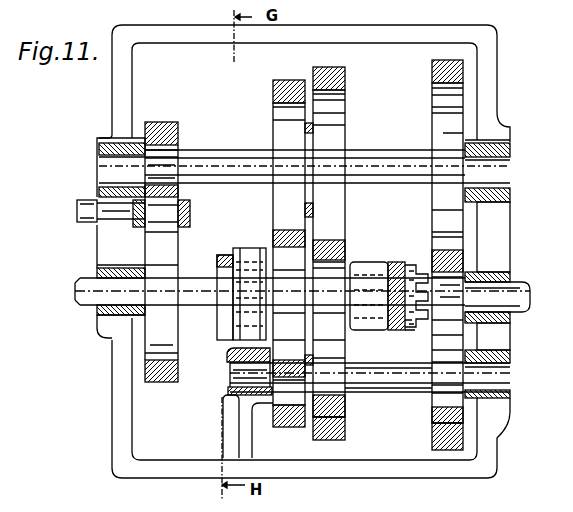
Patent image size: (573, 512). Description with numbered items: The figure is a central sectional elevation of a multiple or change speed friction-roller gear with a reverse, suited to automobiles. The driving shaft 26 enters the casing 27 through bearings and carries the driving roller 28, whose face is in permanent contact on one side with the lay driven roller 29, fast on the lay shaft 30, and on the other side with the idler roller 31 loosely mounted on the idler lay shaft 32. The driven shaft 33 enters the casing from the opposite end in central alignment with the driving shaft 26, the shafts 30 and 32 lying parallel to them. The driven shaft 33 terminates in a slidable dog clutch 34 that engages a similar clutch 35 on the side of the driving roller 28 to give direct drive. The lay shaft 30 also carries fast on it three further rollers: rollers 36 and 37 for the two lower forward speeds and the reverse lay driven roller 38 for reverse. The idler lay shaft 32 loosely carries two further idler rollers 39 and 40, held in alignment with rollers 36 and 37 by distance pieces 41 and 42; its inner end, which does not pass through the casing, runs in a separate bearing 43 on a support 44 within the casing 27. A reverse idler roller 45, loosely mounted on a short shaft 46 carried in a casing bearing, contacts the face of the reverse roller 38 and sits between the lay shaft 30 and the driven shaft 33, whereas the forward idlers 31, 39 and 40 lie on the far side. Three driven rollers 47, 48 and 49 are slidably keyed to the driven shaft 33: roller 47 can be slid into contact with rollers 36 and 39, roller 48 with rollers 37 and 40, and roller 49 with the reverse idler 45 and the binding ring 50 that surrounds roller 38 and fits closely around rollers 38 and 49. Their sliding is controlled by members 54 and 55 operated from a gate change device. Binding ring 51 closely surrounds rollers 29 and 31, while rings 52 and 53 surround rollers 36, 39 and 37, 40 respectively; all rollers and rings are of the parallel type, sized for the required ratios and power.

The driving shaft 26 is at (500, 295).
The casing 27 is at (498, 210).
The driving roller 28 is at (447, 288).
The lay driven roller 29 is at (445, 106).
The lay shaft 30 is at (113, 163).
The idler roller 31 is at (448, 360).
The idler lay shaft 32 is at (483, 377).
The driven shaft 33 is at (96, 302).
The dog clutch 34 is at (418, 266).
The clutch 35 is at (412, 326).
The lay driven roller 36 is at (335, 110).
The lay driven roller 37 is at (293, 135).
The reverse lay driven roller 38 is at (160, 170).
The idler roller 39 is at (340, 410).
The idler roller 40 is at (285, 425).
The distance piece 41 is at (415, 373).
The distance piece 42 is at (310, 398).
The separate bearing 43 is at (238, 392).
The support 44 is at (243, 437).
The reverse idler roller 45 is at (191, 215).
The short shaft 46 is at (98, 222).
The driven roller 47 is at (360, 268).
The driven roller 48 is at (245, 258).
The driven roller 49 is at (240, 358).
The binding ring 50 is at (160, 122).
The binding ring 51 is at (438, 70).
The binding ring 52 is at (345, 78).
The binding ring 53 is at (278, 91).
The controlling member 54 is at (395, 268).
The controlling member 55 is at (225, 262).